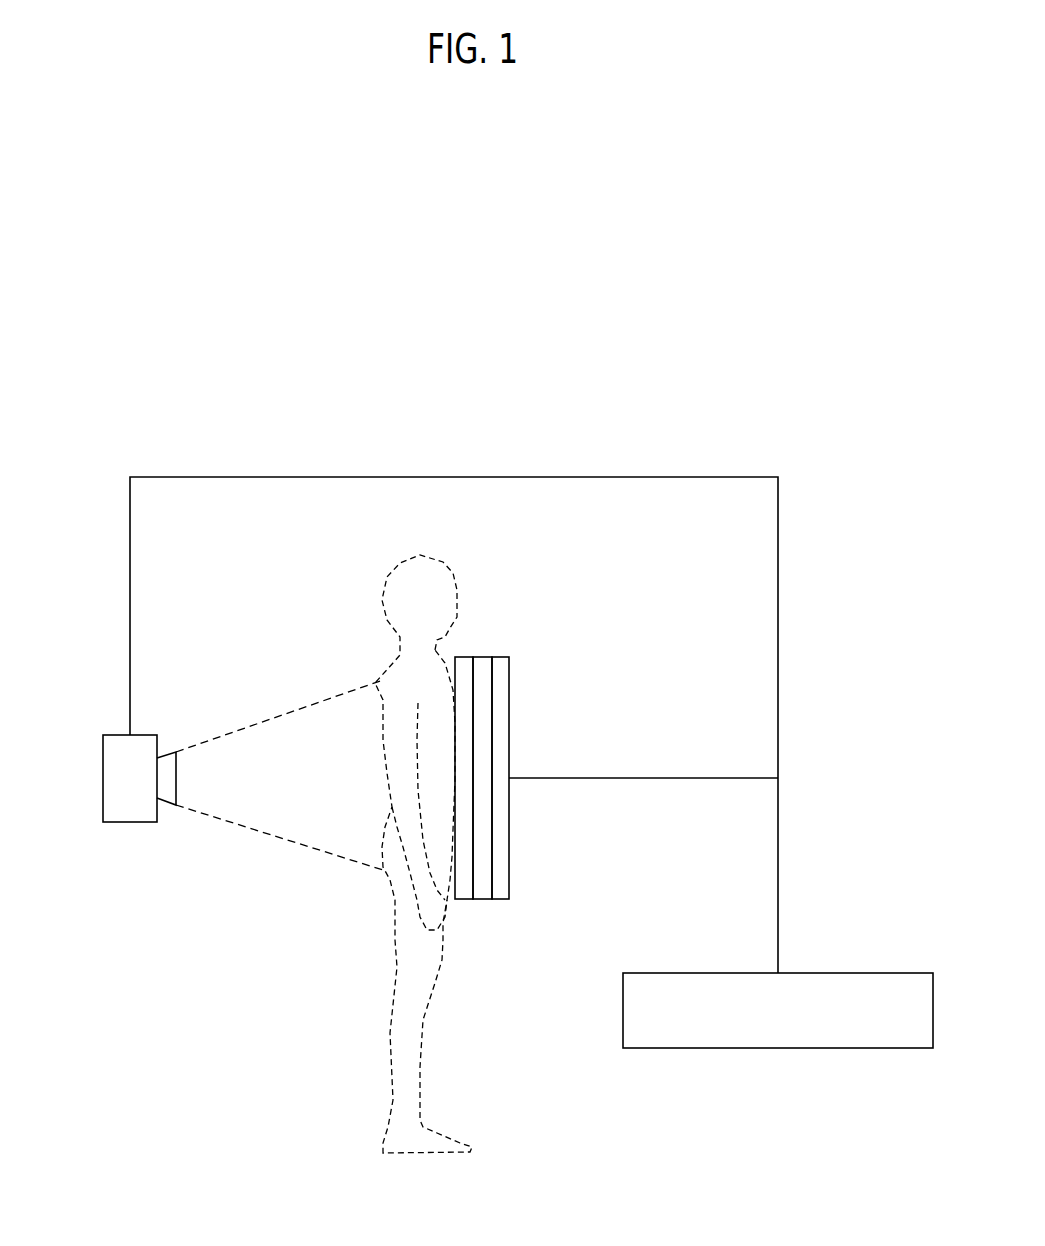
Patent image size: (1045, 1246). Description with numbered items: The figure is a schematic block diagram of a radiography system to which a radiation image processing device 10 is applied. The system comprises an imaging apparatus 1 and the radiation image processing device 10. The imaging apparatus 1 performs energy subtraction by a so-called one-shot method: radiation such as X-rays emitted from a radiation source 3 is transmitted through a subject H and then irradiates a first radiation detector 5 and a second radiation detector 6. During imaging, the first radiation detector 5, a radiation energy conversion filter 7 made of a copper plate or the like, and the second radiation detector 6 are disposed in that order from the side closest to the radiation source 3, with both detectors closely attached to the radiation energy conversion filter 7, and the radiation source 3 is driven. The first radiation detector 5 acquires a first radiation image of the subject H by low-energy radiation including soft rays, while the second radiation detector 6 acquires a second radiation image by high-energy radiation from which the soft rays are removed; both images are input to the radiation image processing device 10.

The imaging apparatus 1 is at (175, 432).
The radiation source 3 is at (103, 777).
The first radiation detector 5 is at (465, 657).
The second radiation detector 6 is at (500, 657).
The radiation energy conversion filter 7 is at (480, 900).
The subject H is at (395, 562).
The radiation image processing device 10 is at (893, 973).